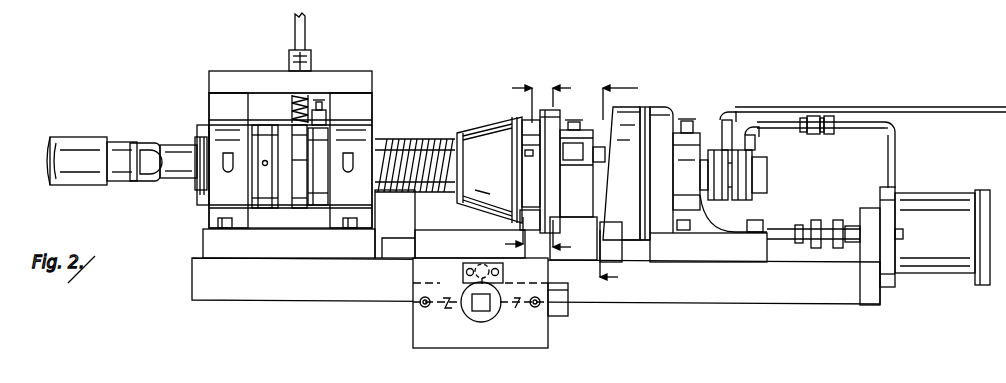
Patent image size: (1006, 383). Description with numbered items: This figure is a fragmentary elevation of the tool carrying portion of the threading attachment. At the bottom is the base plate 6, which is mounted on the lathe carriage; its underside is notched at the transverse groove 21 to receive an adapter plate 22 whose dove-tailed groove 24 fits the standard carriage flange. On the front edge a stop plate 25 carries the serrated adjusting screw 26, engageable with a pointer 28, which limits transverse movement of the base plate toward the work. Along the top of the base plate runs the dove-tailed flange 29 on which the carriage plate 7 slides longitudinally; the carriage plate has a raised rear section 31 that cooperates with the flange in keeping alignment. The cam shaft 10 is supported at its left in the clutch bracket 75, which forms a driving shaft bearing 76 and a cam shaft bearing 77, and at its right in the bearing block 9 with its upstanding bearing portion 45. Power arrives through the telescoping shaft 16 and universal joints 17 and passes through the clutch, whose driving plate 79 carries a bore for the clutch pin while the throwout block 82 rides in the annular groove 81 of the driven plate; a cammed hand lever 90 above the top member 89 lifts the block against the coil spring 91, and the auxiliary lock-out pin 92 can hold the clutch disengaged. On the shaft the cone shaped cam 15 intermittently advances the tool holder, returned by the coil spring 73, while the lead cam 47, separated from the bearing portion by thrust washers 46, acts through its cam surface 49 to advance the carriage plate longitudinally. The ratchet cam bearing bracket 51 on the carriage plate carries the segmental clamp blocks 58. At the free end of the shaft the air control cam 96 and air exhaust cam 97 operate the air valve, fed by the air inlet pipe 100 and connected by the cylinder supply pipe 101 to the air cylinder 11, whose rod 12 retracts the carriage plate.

The base plate 6 is at (753, 320).
The carriage plate 7 is at (407, 278).
The bearing block 9 is at (707, 252).
The cam shaft 10 is at (376, 192).
The air cylinder 11 is at (937, 196).
The rod 12 is at (827, 222).
The cone shaped cam 15 is at (481, 133).
The telescoping shaft 16 is at (77, 141).
The universal joints 17 is at (148, 141).
The transverse groove 21 is at (570, 297).
The adapter plate 22 is at (557, 312).
The dove-tailed groove 24 is at (512, 305).
The stop plate 25 is at (418, 317).
The adjusting screw 26 is at (476, 313).
The pointer 28 is at (478, 268).
The dove-tailed flange 29 is at (388, 252).
The raised rear section 31 is at (423, 209).
The upstanding bearing portion 45 is at (672, 112).
The thrust washers 46 is at (648, 108).
The lead cam 47 is at (628, 115).
The cam surface 49 is at (630, 202).
The ratchet cam bearing bracket 51 is at (560, 119).
The segmental clamp blocks 58 is at (540, 120).
The coil spring 73 is at (433, 146).
The clutch bracket 75 is at (214, 206).
The driving shaft bearing 76 is at (207, 127).
The cam shaft bearing 77 is at (371, 127).
The driving plate 79 is at (268, 212).
The annular groove 81 is at (300, 212).
The throwout block 82 is at (295, 133).
The top member 89 is at (216, 80).
The cammed hand lever 90 is at (306, 40).
The coil spring 91 is at (303, 100).
The auxiliary lock-out pin 92 is at (326, 110).
The air control cam 96 is at (722, 197).
The air exhaust cam 97 is at (748, 205).
The air inlet pipe 100 is at (781, 111).
The cylinder supply pipe 101 is at (897, 162).